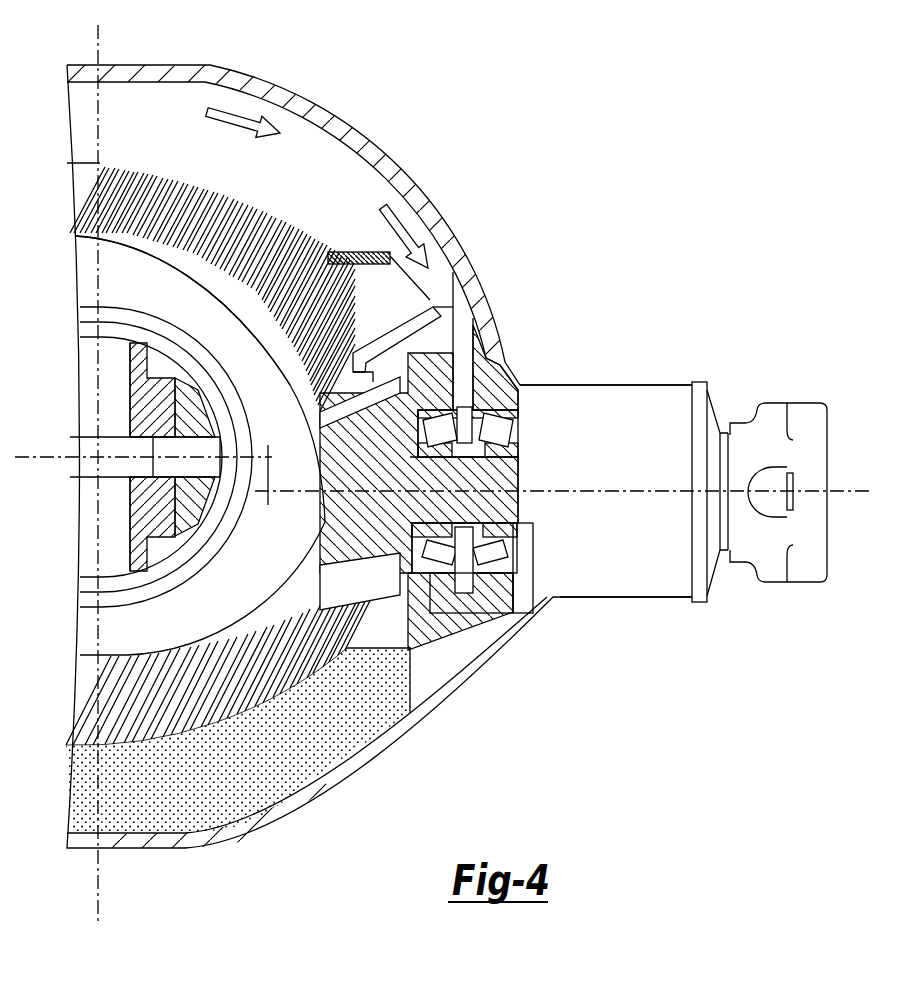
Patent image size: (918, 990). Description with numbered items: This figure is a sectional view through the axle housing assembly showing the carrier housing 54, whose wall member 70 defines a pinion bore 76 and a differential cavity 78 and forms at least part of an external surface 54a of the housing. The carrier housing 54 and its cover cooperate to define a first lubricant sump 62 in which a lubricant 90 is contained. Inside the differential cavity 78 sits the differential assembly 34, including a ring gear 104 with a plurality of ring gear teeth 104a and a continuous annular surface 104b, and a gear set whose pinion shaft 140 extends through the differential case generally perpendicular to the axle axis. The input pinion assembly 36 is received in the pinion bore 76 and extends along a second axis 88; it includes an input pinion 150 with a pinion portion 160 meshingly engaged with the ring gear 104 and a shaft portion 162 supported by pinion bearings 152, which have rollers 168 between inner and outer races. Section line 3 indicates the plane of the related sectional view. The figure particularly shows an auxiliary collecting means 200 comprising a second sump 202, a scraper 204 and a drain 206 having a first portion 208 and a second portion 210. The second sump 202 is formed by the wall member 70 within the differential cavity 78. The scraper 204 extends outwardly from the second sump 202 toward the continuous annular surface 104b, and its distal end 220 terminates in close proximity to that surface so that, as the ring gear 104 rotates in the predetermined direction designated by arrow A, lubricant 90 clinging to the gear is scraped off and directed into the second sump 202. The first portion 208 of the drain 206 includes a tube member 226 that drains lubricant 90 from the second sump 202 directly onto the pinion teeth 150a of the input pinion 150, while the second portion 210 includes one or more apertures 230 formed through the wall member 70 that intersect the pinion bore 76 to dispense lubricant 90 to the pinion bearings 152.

The section line 3- 3 is at (28, 489).
The differential assembly 34 is at (240, 195).
The input pinion assembly 36 is at (516, 476).
The carrier housing 54 is at (173, 845).
The external surface 54a is at (313, 100).
The first lubricant sump 62 is at (304, 774).
The wall member 70 is at (408, 167).
The pinion bore 76 is at (522, 415).
The differential cavity 78 is at (185, 101).
The second axis 88 is at (602, 492).
The lubricant 90 is at (360, 733).
The ring gear 104 is at (180, 167).
The ring gear teeth 104a is at (123, 163).
The continuous annular surface 104b is at (110, 163).
The pinion shaft 140 is at (197, 447).
The input pinion 150 is at (337, 463).
The pinion teeth 150a is at (322, 413).
The pinion bearings 152 is at (489, 408).
The pinion portion 160 is at (320, 512).
The shaft portion 162 is at (521, 524).
The rollers 168 is at (433, 432).
The auxiliary collecting means 200 is at (458, 322).
The second sump 202 is at (461, 406).
The scraper 204 is at (370, 250).
The drain 206 is at (605, 242).
The first portion 208 is at (434, 306).
The second portion 210 is at (490, 395).
The distal end 220 is at (330, 247).
The tube member 226 is at (370, 323).
The apertures 230 is at (436, 501).
The arrow A is at (413, 240).